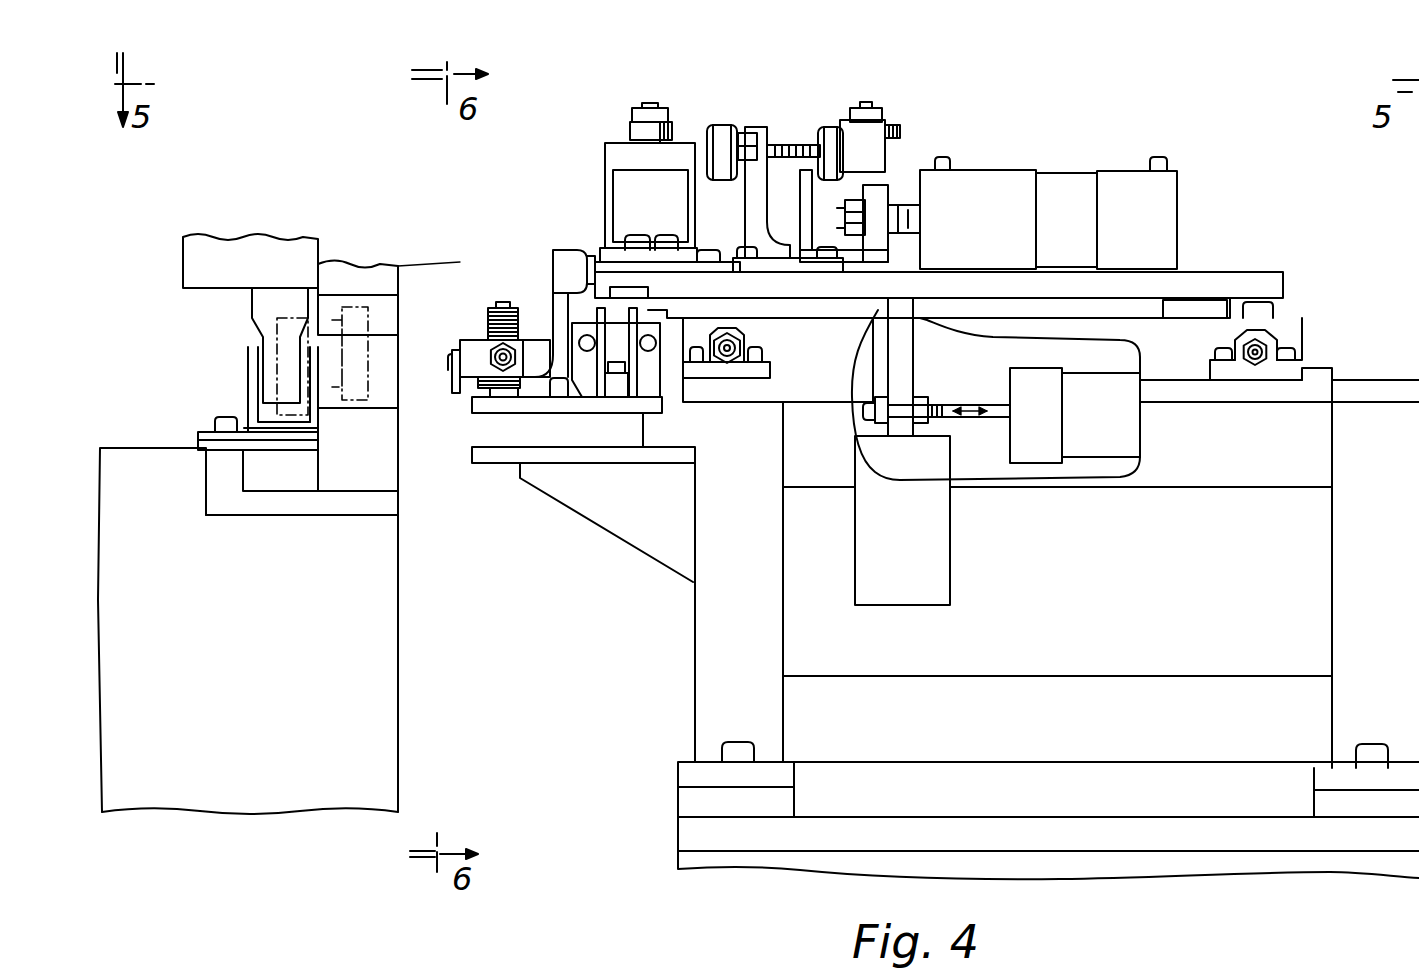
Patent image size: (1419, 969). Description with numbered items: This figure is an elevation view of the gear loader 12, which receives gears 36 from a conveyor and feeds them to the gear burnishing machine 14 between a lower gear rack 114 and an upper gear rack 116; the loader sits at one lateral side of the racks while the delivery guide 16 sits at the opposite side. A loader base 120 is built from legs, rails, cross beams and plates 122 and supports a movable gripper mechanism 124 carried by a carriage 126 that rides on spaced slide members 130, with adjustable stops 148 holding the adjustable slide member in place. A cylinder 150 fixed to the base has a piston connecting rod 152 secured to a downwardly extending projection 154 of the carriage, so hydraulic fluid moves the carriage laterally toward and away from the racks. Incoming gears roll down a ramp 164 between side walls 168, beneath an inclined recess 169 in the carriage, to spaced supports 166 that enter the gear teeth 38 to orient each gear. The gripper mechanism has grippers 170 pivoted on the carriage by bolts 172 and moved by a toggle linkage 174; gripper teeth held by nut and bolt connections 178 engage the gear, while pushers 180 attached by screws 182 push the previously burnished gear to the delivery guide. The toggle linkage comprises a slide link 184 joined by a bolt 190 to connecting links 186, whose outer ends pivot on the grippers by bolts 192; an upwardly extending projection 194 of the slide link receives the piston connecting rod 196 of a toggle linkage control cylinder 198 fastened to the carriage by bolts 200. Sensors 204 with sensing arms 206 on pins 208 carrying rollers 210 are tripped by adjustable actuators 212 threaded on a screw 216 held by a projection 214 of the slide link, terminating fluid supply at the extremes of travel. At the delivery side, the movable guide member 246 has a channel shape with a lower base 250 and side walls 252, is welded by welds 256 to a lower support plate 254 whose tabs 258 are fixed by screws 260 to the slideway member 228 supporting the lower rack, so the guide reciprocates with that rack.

The gear loader 12 is at (1003, 114).
The gear burnishing machine 14 is at (393, 245).
The delivery guide 16 is at (185, 388).
The gear 36 is at (348, 306).
The gear teeth 38 is at (500, 316).
The lower gear rack 114 is at (381, 468).
The upper gear rack 116 is at (385, 280).
The loader base 120 is at (1347, 382).
The vertical legs, rails, cross beams and plates 122 is at (566, 478).
The gripper mechanism 124 is at (496, 303).
The carriage 126 is at (1255, 270).
The slide member 130 is at (798, 368).
The adjustable stop 148 is at (727, 365).
The cylinder 150 is at (1090, 445).
The piston connecting rod 152 is at (990, 405).
The downwardly extending projection 154 is at (898, 340).
The ramp 164 is at (613, 363).
The spaced support 166 is at (555, 397).
The side wall 168 is at (632, 392).
The inclined recess 169 is at (610, 292).
The gripper 170 is at (562, 256).
The bolt 172 is at (713, 262).
The toggle linkage 174 is at (597, 243).
The nut and bolt connection 178 is at (503, 362).
The pusher 180 is at (455, 390).
The screw 182 is at (450, 360).
The slide link 184 is at (620, 245).
The connecting link 186 is at (650, 248).
The bolt 190 is at (670, 248).
The bolt 192 is at (637, 250).
The upwardly extending projection 194 is at (880, 197).
The piston connecting rod 196 is at (920, 222).
The toggle linkage control cylinder 198 is at (1082, 172).
The bolt 200 is at (945, 158).
The sensor 204 is at (605, 190).
The sensing arm 206 is at (660, 115).
The pin 208 is at (648, 104).
The roller 210 is at (637, 128).
The adjustable actuator 212 is at (722, 128).
The upwardly extending projection 214 is at (752, 212).
The screw 216 is at (793, 145).
The slideway member 228 is at (277, 507).
The movable guide member 246 is at (318, 423).
The lower base 250 is at (297, 440).
The side wall 252 is at (249, 352).
The lower support plate 254 is at (259, 444).
The weld 256 is at (247, 432).
The tab 258 is at (202, 444).
The screw 260 is at (213, 424).